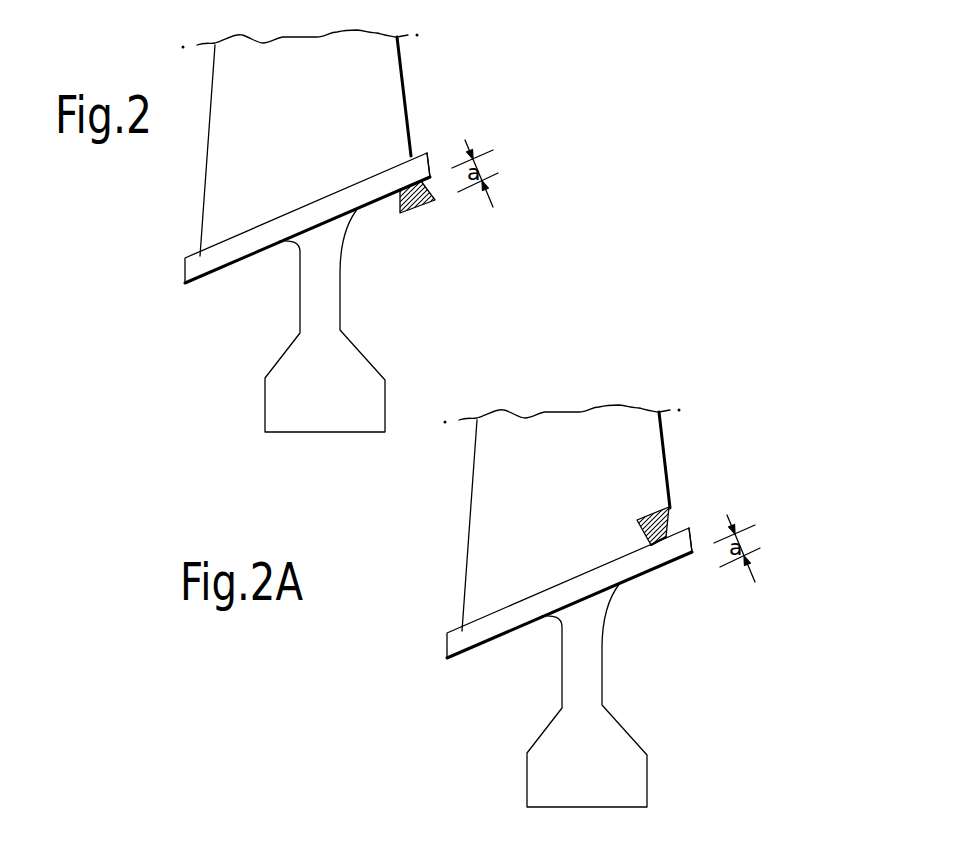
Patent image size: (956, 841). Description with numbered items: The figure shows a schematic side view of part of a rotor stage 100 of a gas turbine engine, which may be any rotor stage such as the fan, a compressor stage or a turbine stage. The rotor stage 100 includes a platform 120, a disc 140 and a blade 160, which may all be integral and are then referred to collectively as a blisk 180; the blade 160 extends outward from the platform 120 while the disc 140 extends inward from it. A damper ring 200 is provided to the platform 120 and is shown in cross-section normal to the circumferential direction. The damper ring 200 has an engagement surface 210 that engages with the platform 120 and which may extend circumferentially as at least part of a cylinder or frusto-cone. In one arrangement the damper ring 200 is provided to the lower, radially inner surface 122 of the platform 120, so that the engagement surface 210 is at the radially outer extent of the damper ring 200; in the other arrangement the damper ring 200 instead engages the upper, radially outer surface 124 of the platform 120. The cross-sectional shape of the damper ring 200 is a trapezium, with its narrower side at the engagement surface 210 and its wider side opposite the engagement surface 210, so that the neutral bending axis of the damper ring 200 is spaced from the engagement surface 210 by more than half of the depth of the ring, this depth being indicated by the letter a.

In FIG. 2, the rotor stage 100 is at (477, 60).
In FIG. 2A, the rotor stage 100 is at (739, 435).
In FIG. 2, the platform 120 is at (271, 203).
In FIG. 2A, the platform 120 is at (533, 576).
In FIG. 2, the lower (radially inner) surface of the platform 122 is at (228, 261).
In FIG. 2A, the lower (radially inner) surface of the platform 122 is at (490, 636).
In FIG. 2, the upper (radially outer) surface of the platform 124 is at (417, 154).
In FIG. 2A, the upper (radially outer) surface of the platform 124 is at (681, 526).
In FIG. 2, the disc 140 is at (310, 328).
In FIG. 2A, the disc 140 is at (572, 703).
In FIG. 2, the blade 160 is at (220, 202).
In FIG. 2A, the blade 160 is at (482, 577).
In FIG. 2, the blisk 180 is at (96, 215).
In FIG. 2A, the blisk 180 is at (358, 590).
In FIG. 2, the damper ring 200 is at (417, 209).
In FIG. 2A, the damper ring 200 is at (652, 514).
In FIG. 2, the engagement surface 210 is at (403, 184).
In FIG. 2A, the engagement surface 210 is at (667, 538).